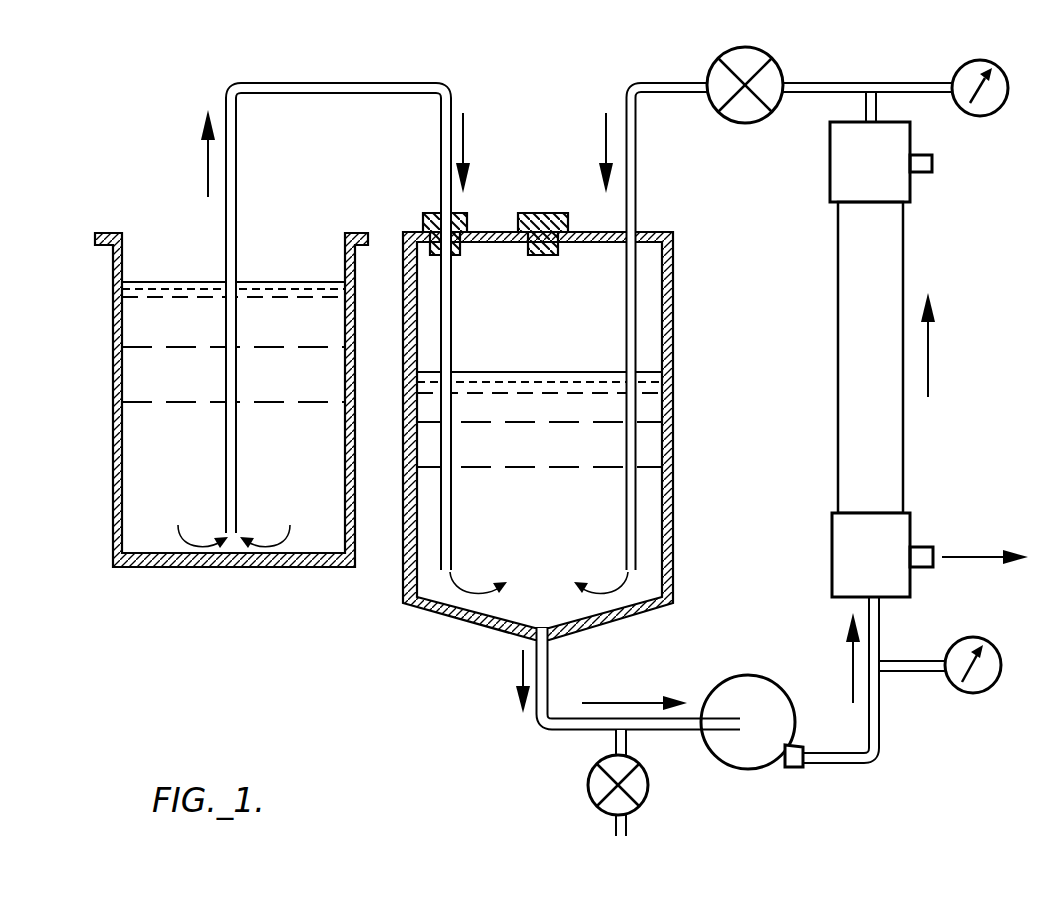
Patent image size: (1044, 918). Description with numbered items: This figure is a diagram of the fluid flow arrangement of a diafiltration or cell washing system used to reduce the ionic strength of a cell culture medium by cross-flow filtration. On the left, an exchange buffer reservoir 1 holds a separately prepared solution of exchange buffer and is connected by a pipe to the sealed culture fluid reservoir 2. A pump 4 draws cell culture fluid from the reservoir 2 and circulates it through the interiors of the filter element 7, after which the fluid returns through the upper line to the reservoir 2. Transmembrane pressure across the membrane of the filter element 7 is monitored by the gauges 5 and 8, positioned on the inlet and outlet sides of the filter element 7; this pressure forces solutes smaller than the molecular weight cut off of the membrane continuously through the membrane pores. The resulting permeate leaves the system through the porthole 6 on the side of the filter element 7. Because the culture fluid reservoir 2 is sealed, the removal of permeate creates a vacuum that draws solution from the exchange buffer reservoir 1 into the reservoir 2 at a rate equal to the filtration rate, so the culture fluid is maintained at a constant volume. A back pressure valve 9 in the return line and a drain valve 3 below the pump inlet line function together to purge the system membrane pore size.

The exchange buffer reservoir 1 is at (113, 495).
The reservoir 2 is at (673, 497).
The drain valve 3 is at (588, 788).
The pump 4 is at (758, 675).
The gauge 5 is at (970, 637).
The porthole 6 is at (920, 543).
The filter element 7 is at (885, 245).
The gauge 8 is at (978, 58).
The back pressure valve 9 is at (755, 50).